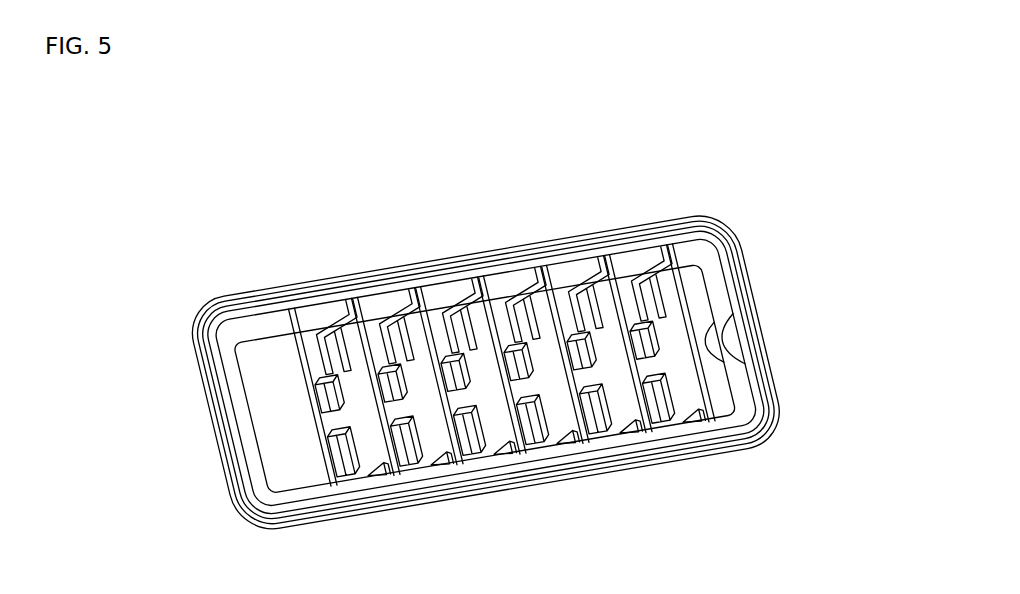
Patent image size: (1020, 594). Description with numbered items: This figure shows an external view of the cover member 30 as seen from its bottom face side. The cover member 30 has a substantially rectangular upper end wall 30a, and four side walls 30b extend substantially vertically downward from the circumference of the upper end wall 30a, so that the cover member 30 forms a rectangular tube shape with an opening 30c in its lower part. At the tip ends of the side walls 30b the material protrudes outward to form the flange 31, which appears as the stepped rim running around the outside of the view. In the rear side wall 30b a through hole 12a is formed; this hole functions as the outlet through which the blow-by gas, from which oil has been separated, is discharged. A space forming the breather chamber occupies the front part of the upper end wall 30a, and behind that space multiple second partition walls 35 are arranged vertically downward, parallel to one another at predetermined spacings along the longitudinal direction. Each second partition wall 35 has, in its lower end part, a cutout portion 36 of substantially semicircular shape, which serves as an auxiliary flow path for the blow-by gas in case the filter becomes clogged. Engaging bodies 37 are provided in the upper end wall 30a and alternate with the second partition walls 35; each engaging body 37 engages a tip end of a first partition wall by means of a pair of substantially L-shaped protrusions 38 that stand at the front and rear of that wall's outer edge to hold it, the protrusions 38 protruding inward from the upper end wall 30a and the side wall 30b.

The cover member 30 is at (509, 376).
The upper end wall 30a is at (257, 385).
The side walls 30b is at (278, 332).
The opening 30c is at (203, 322).
The flange 31 is at (741, 281).
The through hole 12a is at (712, 347).
The second partition walls 35 is at (510, 420).
The cutout portion 36 is at (403, 318).
The engaging bodies 37 is at (334, 308).
The protrusions 38 is at (316, 442).